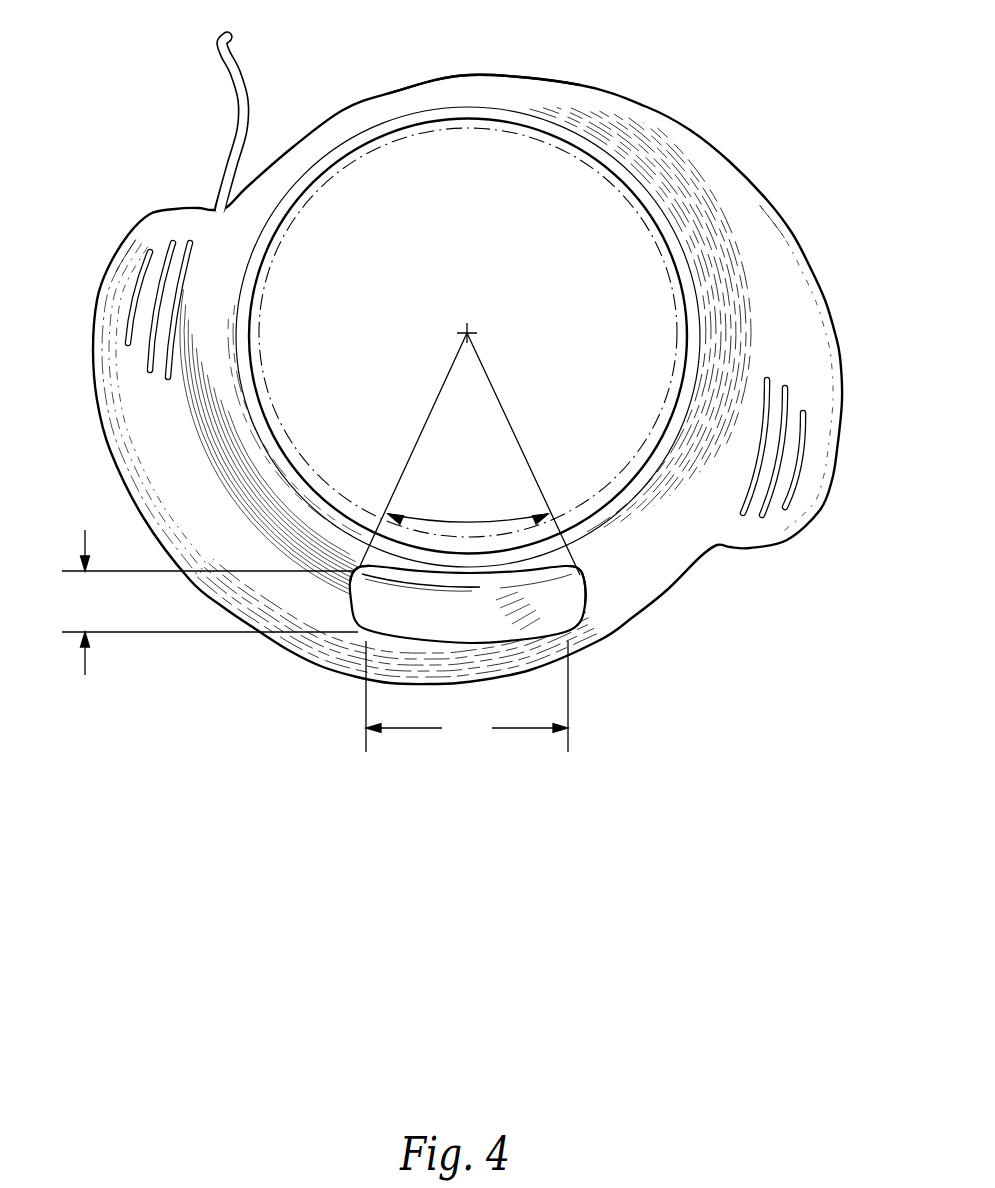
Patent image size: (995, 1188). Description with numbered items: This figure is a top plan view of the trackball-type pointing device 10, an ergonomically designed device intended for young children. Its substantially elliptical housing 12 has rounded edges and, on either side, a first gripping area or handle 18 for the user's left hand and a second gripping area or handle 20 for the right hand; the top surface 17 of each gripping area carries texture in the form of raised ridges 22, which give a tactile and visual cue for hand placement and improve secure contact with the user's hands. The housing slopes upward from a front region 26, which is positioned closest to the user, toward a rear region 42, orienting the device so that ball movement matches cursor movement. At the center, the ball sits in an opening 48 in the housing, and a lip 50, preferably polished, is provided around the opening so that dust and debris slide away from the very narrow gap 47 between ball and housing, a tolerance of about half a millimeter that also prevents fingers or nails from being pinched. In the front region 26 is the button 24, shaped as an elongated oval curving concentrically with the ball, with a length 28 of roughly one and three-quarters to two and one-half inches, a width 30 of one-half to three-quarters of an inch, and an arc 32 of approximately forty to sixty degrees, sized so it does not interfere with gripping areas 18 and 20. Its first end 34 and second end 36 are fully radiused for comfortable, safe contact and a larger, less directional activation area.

The pointing device 10 is at (143, 116).
The housing 12 is at (693, 143).
The top surface 17 is at (166, 447).
The first gripping area 18 is at (90, 354).
The second gripping area 20 is at (848, 354).
The raised ridges 22 is at (150, 257).
The button 24 is at (470, 631).
The front region 26 is at (317, 687).
The length 28 is at (467, 696).
The width 30 is at (210, 602).
The arc 32 is at (470, 449).
The first end 34 is at (353, 567).
The second end 36 is at (588, 588).
The rear region 42 is at (527, 77).
The gap 47 is at (681, 318).
The opening 48 is at (365, 198).
The lip 50 is at (677, 245).